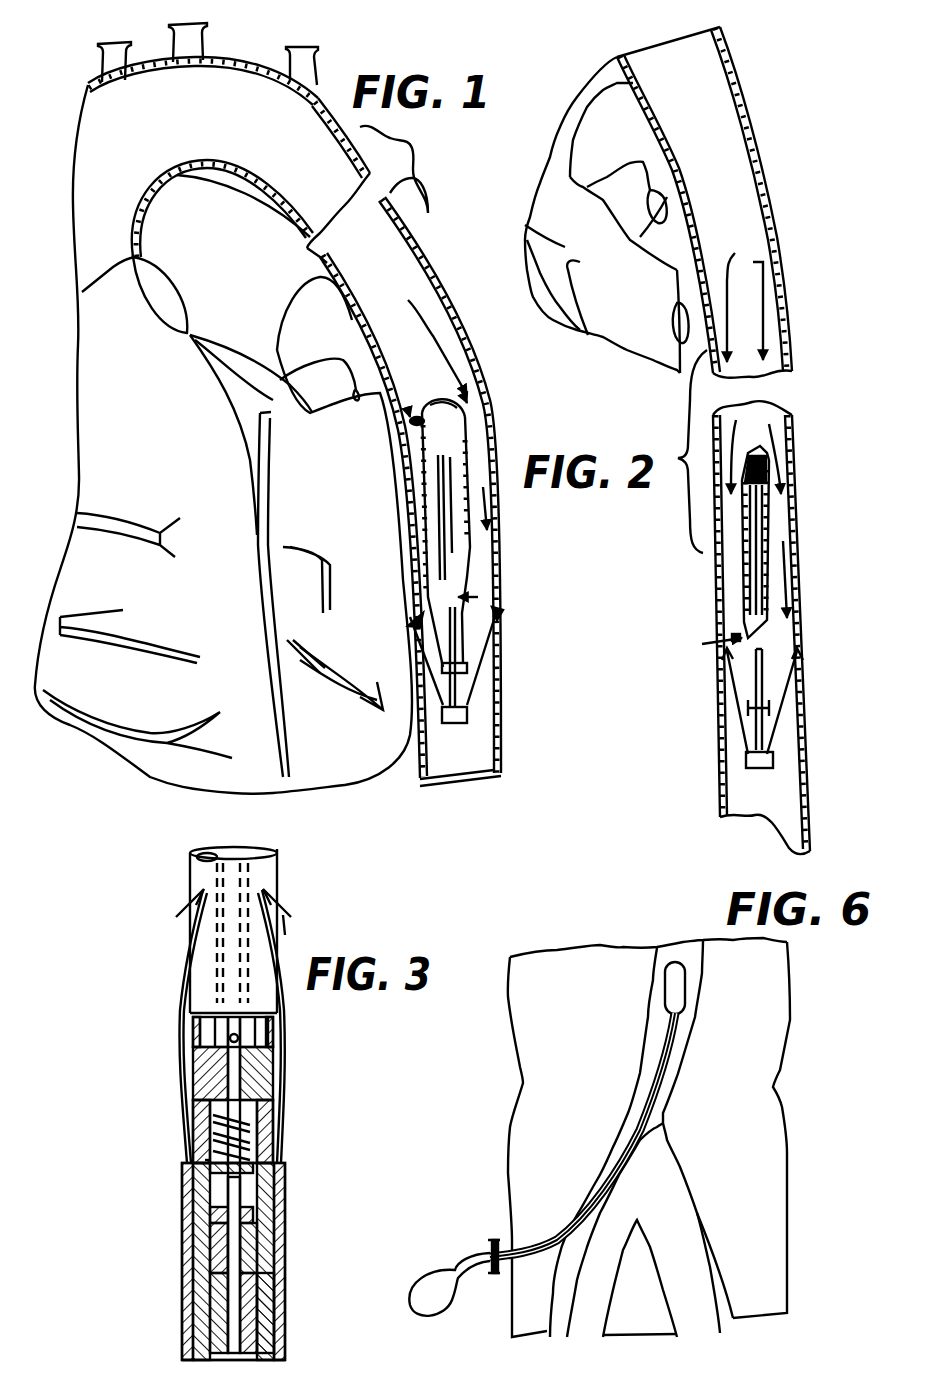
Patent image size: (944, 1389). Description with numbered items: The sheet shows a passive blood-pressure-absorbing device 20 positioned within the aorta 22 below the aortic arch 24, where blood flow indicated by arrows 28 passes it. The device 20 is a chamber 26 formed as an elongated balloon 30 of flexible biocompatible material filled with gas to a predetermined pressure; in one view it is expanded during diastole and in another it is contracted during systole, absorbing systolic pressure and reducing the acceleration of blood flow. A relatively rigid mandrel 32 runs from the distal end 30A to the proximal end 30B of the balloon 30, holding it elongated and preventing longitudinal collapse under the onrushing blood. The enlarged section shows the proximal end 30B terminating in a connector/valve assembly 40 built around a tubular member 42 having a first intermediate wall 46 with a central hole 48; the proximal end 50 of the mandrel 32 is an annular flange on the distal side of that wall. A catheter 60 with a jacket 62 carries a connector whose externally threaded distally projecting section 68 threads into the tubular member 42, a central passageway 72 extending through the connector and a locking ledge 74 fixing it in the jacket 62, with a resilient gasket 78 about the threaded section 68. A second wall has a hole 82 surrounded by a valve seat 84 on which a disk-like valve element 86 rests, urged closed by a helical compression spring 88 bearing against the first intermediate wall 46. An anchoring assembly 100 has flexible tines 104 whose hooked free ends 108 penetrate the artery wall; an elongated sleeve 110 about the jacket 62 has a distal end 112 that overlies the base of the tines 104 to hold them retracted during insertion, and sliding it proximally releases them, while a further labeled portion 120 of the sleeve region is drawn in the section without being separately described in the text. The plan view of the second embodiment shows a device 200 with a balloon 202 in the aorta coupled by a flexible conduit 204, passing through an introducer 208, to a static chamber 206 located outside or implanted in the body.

In FIG. 1, the device 20 is at (478, 597).
In FIG. 2, the device 20 is at (702, 644).
In FIG. 1, the aorta 22 is at (500, 418).
In FIG. 2, the aorta 22 is at (800, 424).
In FIG. 6, the aorta 22 is at (690, 1010).
In FIG. 1, the aortic arch 24 is at (262, 60).
In FIG. 1, the chamber 26 is at (423, 420).
In FIG. 2, the chamber 26 is at (762, 446).
In FIG. 1, the blood flow arrows 28 is at (533, 510).
In FIG. 2, the blood flow arrows 28 is at (837, 605).
In FIG. 1, the balloon 30 is at (420, 563).
In FIG. 2, the balloon 30 is at (738, 597).
In FIG. 3, the balloon 30 is at (190, 870).
In FIG. 1, the distal end of balloon 30A is at (420, 417).
In FIG. 2, the distal end of balloon 30A is at (778, 432).
In FIG. 1, the proximal end of balloon 30B is at (455, 648).
In FIG. 2, the proximal end of balloon 30B is at (748, 708).
In FIG. 3, the proximal end of balloon 30B is at (286, 927).
In FIG. 1, the mandrel 32 is at (447, 547).
In FIG. 2, the mandrel 32 is at (756, 566).
In FIG. 3, the mandrel 32 is at (207, 853).
In FIG. 3, the connector/valve assembly 40 is at (272, 1110).
In FIG. 3, the tubular member 42 is at (258, 1130).
In FIG. 3, the first intermediate wall 46 is at (195, 1092).
In FIG. 3, the central hole 48 is at (197, 1062).
In FIG. 3, the proximal end of mandrel 50 is at (253, 1072).
In FIG. 3, the catheter 60 is at (190, 1313).
In FIG. 3, the jacket 62 is at (270, 1300).
In FIG. 3, the distally projecting tubular section 68 is at (268, 1235).
In FIG. 3, the central passageway 72 is at (215, 1290).
In FIG. 3, the locking ledge 74 is at (195, 1340).
In FIG. 3, the gasket 78 is at (262, 1268).
In FIG. 3, the central hole 82 is at (215, 1212).
In FIG. 3, the valve seat 84 is at (270, 1170).
In FIG. 3, the valve element 86 is at (205, 1158).
In FIG. 3, the helical compression spring 88 is at (200, 1120).
In FIG. 1, the anchoring assembly 100 is at (474, 718).
In FIG. 2, the anchoring assembly 100 is at (775, 761).
In FIG. 1, the tines 104 is at (420, 613).
In FIG. 2, the tines 104 is at (764, 692).
In FIG. 3, the tines 104 is at (190, 940).
In FIG. 3, the free end of tine 108 is at (176, 915).
In FIG. 3, the elongated sleeve 110 is at (185, 1245).
In FIG. 3, the distal end of sleeve 112 is at (185, 1168).
In FIG. 3, the housing wall 120 is at (258, 1200).
In FIG. 6, the device 200 is at (637, 1030).
In FIG. 6, the balloon 202 is at (680, 990).
In FIG. 6, the flexible conduit 204 is at (663, 1073).
In FIG. 6, the static chamber 206 is at (427, 1310).
In FIG. 6, the introducer 208 is at (543, 1250).